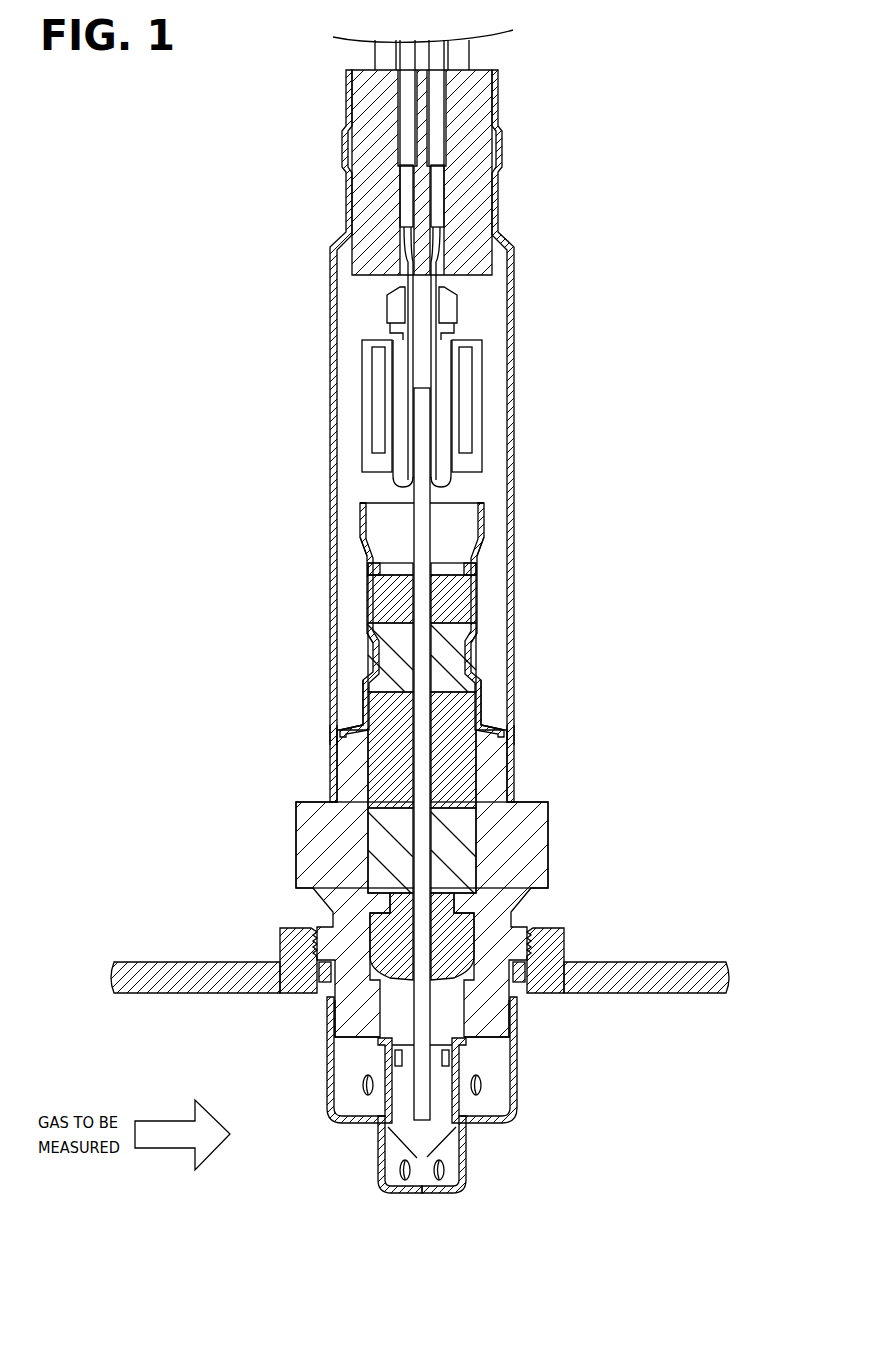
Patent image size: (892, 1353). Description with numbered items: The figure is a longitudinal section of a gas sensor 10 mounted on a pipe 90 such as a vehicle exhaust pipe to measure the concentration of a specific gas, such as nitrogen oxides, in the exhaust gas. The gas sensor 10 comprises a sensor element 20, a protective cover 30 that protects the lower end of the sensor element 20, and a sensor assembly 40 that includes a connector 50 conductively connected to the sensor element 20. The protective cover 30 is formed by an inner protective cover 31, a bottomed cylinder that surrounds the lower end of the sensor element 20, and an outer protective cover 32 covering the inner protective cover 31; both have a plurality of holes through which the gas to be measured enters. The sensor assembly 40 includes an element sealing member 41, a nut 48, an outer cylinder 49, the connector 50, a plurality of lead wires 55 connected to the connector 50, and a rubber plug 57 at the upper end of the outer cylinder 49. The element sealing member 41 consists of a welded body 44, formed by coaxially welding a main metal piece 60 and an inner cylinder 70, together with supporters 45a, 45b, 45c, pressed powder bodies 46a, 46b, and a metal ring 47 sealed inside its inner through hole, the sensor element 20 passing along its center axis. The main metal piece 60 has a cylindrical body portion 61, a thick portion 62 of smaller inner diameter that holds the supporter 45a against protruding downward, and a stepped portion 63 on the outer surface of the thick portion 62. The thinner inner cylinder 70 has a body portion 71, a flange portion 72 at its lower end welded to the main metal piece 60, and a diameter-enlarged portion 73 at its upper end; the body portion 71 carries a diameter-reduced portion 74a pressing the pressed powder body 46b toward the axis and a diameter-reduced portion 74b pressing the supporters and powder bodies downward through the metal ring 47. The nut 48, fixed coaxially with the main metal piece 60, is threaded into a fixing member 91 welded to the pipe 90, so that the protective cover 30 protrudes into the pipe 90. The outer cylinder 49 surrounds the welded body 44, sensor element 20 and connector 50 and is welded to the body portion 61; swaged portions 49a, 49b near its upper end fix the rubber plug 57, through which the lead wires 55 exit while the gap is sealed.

The gas sensor 10 is at (420, 611).
The sensor element 20 is at (423, 867).
The protective cover 30 is at (492, 1095).
The inner protective cover 31 is at (470, 1063).
The outer protective cover 32 is at (519, 1083).
The sensor assembly 40 is at (469, 616).
The element sealing member 41 is at (517, 771).
The welded body 44 is at (470, 712).
The supporter 45a is at (495, 888).
The supporter 45b is at (470, 778).
The supporter 45c is at (458, 617).
The pressed powder body 46a is at (462, 850).
The pressed powder body 46b is at (468, 670).
The metal ring 47 is at (456, 576).
The nut 48 is at (543, 878).
The outer cylinder 49 is at (461, 436).
The swaged portion 49a is at (348, 191).
The swaged portion 49b is at (348, 98).
The connector 50 is at (490, 440).
The lead wires 55 is at (437, 152).
The rubber plug 57 is at (468, 237).
The main metal piece 60 is at (497, 733).
The body portion 61 is at (441, 903).
The thick portion 62 is at (355, 1020).
The stepped portion 63 is at (330, 995).
The inner cylinder 70 is at (478, 692).
The body portion 71 is at (359, 620).
The flange portion 72 is at (352, 730).
The diameter-enlarged portion 73 is at (362, 504).
The diameter-reduced portion 74a is at (373, 650).
The diameter-reduced portion 74b is at (368, 549).
The pipe 90 is at (190, 975).
The fixing member 91 is at (291, 928).